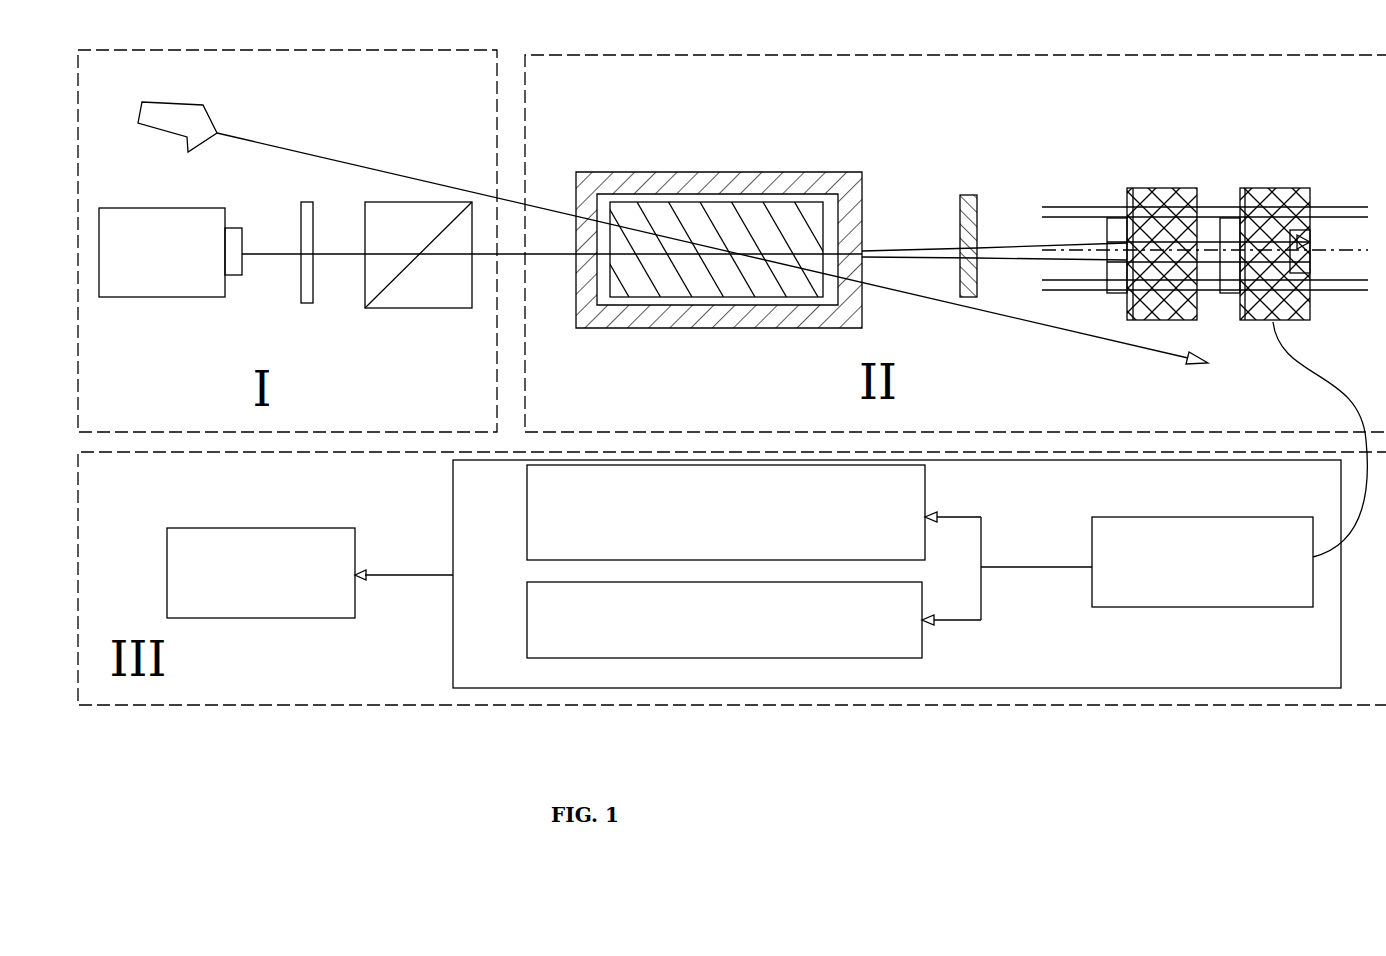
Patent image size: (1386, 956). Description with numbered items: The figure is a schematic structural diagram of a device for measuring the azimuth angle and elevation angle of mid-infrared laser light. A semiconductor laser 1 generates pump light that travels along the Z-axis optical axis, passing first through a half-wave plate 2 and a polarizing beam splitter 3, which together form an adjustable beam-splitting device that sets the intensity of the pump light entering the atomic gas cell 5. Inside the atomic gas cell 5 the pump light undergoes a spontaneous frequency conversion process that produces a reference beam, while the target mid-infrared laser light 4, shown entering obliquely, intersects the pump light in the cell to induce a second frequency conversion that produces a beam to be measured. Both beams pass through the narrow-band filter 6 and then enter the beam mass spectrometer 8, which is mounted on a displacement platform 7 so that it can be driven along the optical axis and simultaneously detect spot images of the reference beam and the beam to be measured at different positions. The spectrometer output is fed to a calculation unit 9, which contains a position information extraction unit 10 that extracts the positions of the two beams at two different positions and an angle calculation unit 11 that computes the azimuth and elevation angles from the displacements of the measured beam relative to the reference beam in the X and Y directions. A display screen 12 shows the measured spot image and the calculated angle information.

The semiconductor laser 1 is at (170, 300).
The half-wave plate 2 is at (305, 305).
The polarizing beam splitter 3 is at (417, 310).
The target mid-infrared laser light 4 is at (214, 113).
The atomic gas cell 5 is at (685, 172).
The narrow-band filter 6 is at (972, 193).
The displacement platform 7 is at (1220, 207).
The beam mass spectrometer 8 is at (1258, 322).
The calculation unit 9 is at (1203, 607).
The position information extraction unit 10 is at (530, 558).
The angle calculation unit 11 is at (922, 647).
The display screen 12 is at (337, 618).